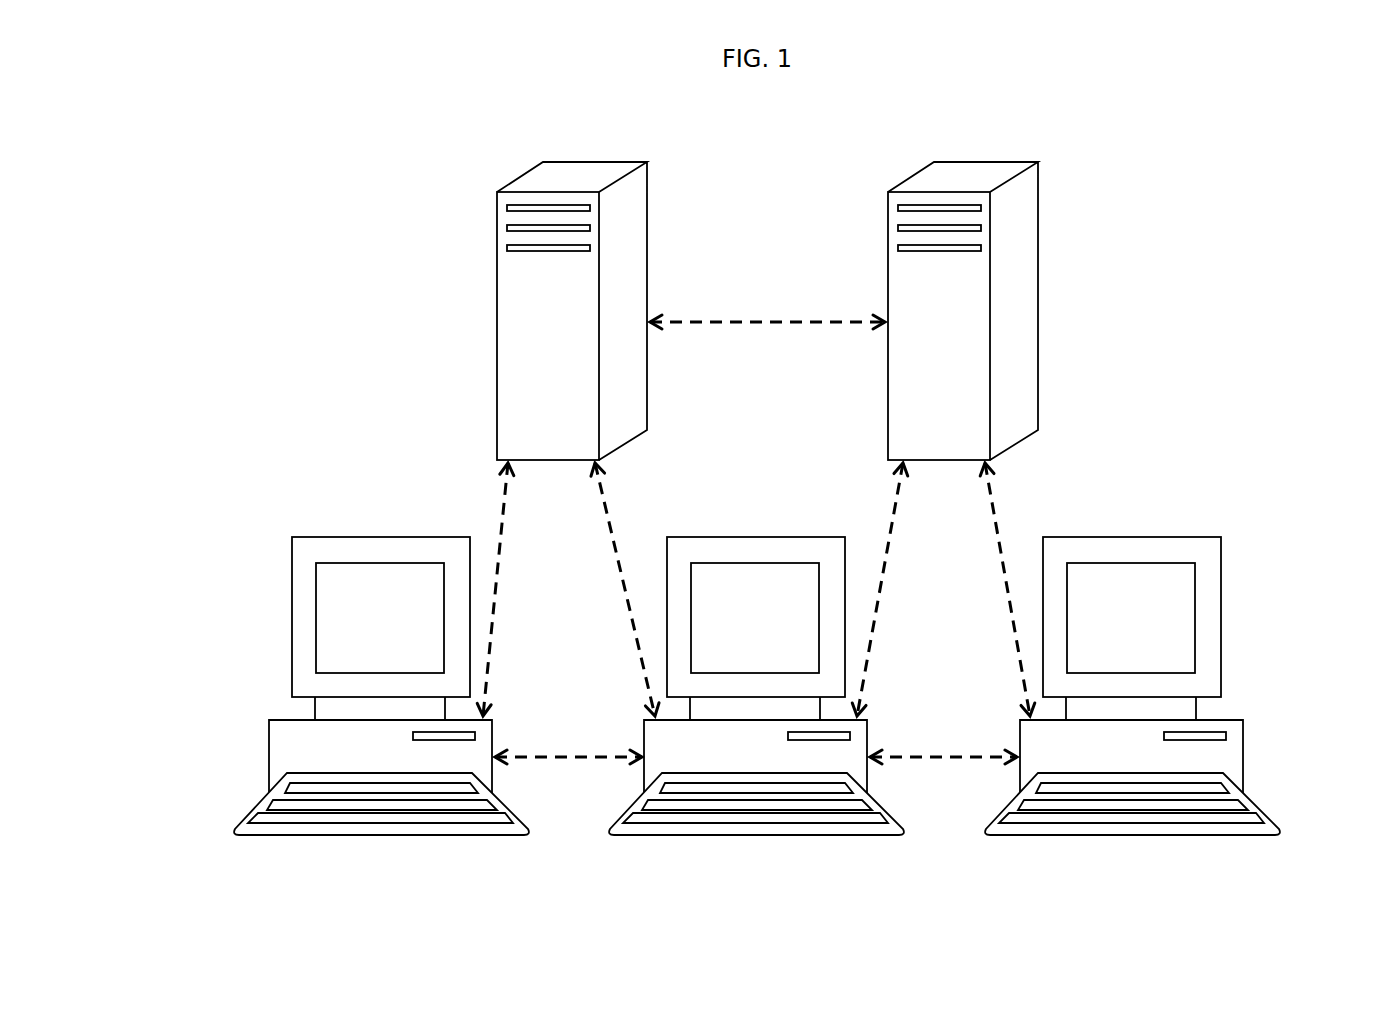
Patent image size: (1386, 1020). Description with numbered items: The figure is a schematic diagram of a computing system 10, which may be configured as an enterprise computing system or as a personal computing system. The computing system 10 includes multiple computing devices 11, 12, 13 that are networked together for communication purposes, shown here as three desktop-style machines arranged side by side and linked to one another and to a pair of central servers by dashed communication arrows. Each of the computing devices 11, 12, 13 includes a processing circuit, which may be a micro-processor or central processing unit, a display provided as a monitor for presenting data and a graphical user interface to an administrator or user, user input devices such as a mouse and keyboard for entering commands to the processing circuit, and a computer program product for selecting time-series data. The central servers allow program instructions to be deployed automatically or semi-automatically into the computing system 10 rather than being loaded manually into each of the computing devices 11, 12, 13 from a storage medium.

The computing system 10 is at (385, 348).
The computing device 11 is at (369, 691).
The computing device 12 is at (752, 691).
The computing device 13 is at (1161, 691).